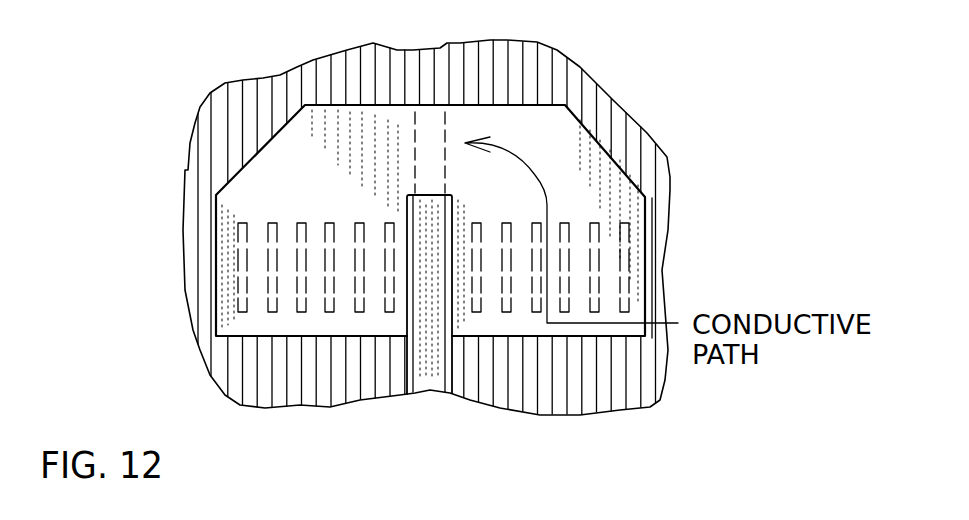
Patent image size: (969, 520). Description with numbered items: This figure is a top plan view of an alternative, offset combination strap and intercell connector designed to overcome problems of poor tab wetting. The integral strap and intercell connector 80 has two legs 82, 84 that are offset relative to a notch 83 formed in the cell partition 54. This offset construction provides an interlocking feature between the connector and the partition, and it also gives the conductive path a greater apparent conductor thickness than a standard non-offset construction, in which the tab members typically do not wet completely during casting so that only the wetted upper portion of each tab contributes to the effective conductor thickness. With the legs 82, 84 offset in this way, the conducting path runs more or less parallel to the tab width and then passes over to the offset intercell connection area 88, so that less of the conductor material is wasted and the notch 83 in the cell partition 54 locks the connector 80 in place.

The notch 83 is at (438, 103).
The leg 82 is at (253, 202).
The integral strap and intercell connector 80 is at (563, 172).
The leg 84 is at (640, 198).
The offset intercell connection area 88 is at (428, 130).
The cell partition 54 is at (420, 383).